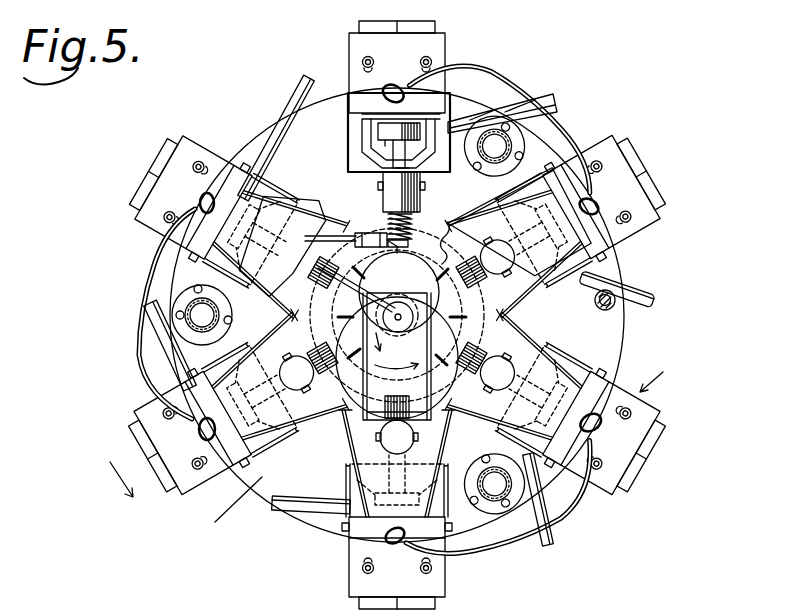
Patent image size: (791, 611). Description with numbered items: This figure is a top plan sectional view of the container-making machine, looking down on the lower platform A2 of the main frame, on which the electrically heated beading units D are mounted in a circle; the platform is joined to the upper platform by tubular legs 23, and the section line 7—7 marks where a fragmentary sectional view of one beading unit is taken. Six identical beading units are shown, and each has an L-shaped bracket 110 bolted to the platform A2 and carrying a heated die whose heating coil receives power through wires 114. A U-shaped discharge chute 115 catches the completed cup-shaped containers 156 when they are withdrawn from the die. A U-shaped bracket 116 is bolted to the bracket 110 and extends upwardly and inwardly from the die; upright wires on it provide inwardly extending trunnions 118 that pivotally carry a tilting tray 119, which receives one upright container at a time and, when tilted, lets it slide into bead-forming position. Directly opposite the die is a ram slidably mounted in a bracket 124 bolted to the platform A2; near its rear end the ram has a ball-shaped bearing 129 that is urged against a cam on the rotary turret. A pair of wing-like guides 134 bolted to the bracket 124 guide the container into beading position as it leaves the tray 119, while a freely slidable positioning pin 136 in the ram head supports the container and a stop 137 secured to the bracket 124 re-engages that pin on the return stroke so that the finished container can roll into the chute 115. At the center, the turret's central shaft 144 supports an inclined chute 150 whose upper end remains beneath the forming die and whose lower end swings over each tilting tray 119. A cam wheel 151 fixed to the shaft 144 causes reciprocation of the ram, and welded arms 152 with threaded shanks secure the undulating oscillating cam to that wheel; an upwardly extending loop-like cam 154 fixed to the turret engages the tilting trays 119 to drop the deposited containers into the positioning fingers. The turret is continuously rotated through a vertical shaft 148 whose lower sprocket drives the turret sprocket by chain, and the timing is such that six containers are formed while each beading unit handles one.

The section line 7— 7 is at (237, 408).
The tubular legs 23 is at (517, 152).
The L-shaped bracket 110 is at (240, 124).
The wires 114 is at (137, 333).
The U-shaped discharge chute 115 is at (302, 85).
The U-shaped bracket 116 is at (260, 200).
The trunnions 118 is at (288, 437).
The tilting tray 119 is at (473, 220).
The bracket 124 is at (421, 204).
The ball-shaped bearing 129 is at (399, 292).
The wing-like guides 134 is at (360, 128).
The positioning pin 136 is at (393, 160).
The stop 137 is at (371, 145).
The central shaft 144 is at (403, 335).
The vertical shaft 148 is at (615, 305).
The inclined chute 150 is at (480, 358).
The cam wheel 151 is at (438, 240).
The welded arms 152 is at (480, 271).
The loop-like cam 154 is at (337, 226).
The cup-shaped container 156 is at (297, 440).
The beading units D is at (662, 371).
The lower platform A2 is at (228, 504).